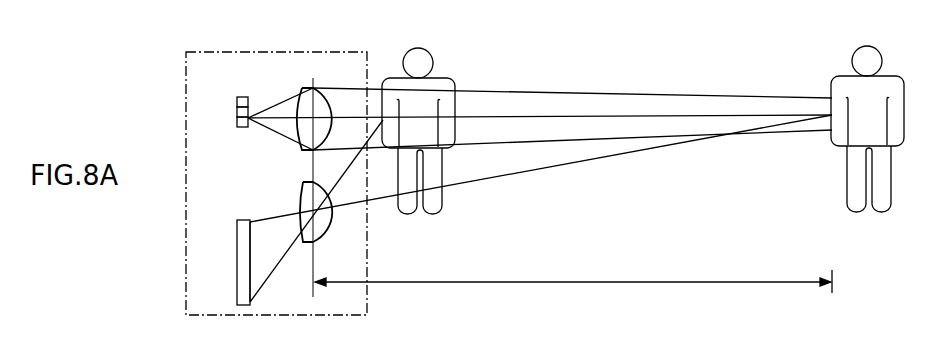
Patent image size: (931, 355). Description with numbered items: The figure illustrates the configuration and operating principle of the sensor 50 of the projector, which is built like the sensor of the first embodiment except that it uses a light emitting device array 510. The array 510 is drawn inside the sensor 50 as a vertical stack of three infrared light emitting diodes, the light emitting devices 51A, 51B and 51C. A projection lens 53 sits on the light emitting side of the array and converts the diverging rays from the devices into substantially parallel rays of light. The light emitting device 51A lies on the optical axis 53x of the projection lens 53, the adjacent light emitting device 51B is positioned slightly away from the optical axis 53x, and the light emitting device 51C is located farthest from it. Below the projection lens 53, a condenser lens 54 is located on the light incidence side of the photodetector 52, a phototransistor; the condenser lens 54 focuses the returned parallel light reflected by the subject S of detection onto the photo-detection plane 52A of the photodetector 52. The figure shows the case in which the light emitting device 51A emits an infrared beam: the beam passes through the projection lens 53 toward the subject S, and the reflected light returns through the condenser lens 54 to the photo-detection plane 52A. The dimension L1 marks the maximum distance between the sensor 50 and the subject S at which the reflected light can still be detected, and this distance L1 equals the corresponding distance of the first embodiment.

The sensor 50 is at (338, 50).
The light emitting device array 510 is at (186, 115).
The light emitting device 51A is at (218, 135).
The light emitting device 51B is at (237, 112).
The light emitting device 51C is at (237, 99).
The projection lens 53 is at (303, 88).
The optical axis 53x is at (287, 119).
The condenser lens 54 is at (301, 205).
The photodetector 52 is at (236, 230).
The photo-detection plane 52A is at (254, 268).
The subject of detection S is at (420, 47).
The maximum distance L1 is at (573, 275).